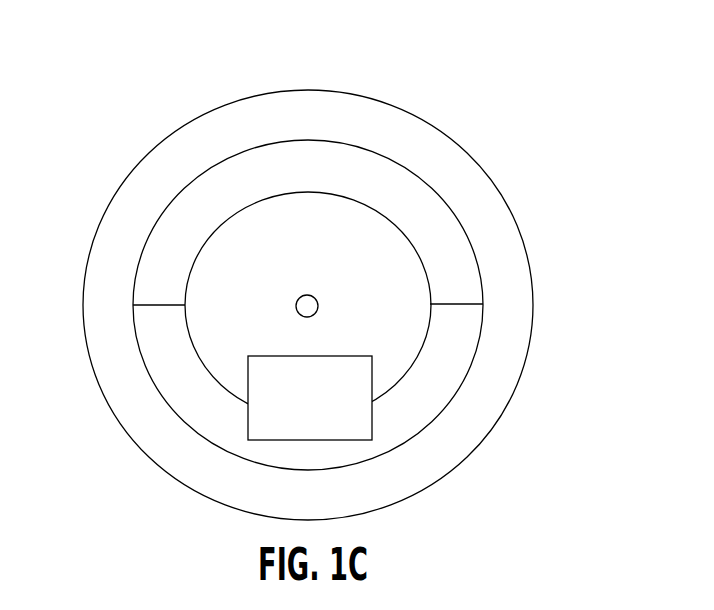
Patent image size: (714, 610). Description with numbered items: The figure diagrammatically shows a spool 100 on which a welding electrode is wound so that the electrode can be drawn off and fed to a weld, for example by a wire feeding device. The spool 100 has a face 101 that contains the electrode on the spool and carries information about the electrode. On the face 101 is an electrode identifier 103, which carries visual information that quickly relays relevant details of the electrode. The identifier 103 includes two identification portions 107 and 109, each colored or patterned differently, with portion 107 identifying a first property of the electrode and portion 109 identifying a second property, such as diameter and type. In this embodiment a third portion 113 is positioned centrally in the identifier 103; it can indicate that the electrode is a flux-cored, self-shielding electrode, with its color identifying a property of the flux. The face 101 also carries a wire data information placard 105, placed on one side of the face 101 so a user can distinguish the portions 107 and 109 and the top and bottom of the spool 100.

The spool 100 is at (526, 125).
The face 101 is at (393, 106).
The electrode identifier 103 is at (198, 173).
The wire data information placard 105 is at (372, 422).
The identification portion 107 is at (153, 272).
The identification portion 109 is at (187, 397).
The third portion 113 is at (408, 333).